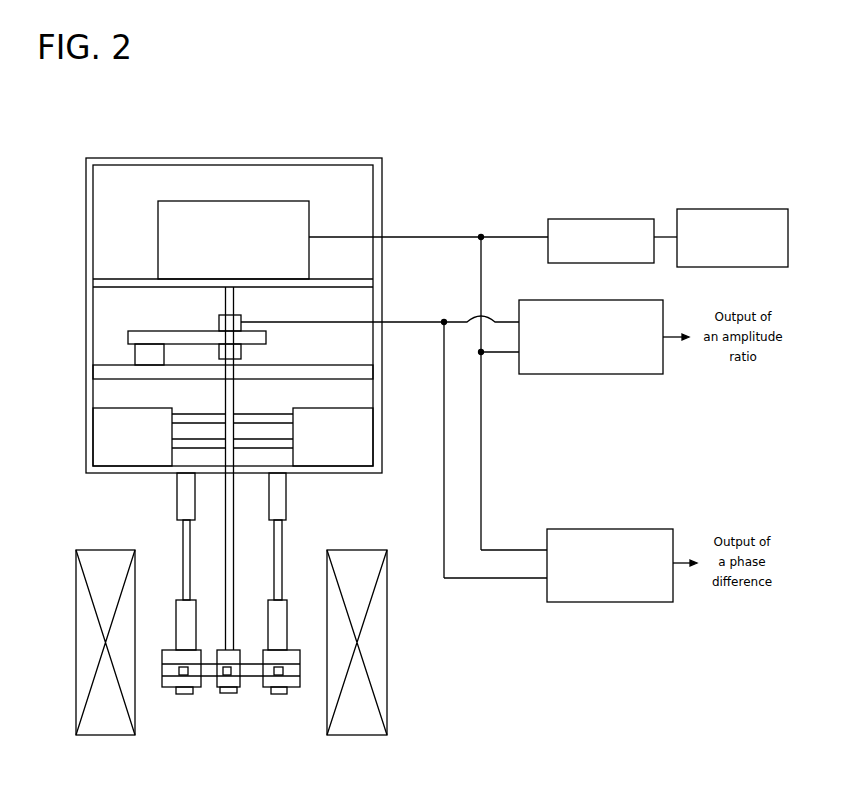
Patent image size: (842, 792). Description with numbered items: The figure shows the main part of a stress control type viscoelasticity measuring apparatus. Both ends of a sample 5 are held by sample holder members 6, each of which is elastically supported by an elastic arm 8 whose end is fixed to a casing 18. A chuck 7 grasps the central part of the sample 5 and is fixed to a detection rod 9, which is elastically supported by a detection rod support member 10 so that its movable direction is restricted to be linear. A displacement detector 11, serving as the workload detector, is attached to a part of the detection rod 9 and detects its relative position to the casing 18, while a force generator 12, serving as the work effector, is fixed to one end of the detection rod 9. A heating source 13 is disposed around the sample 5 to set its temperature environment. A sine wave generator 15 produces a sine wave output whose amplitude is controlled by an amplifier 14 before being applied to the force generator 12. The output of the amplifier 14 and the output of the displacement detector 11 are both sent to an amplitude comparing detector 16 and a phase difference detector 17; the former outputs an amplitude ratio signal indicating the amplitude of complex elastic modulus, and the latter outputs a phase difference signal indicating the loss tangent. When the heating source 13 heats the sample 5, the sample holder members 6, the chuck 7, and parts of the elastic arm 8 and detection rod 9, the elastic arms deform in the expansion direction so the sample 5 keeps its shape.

The sample 5 is at (167, 670).
The sample holder members 6 is at (175, 690).
The chuck 7 is at (225, 690).
The elastic arms 8 is at (187, 523).
The detection rod 9 is at (229, 519).
The detection rod support member 10 is at (202, 418).
The displacement detector 11 is at (192, 328).
The force generator 12 is at (172, 227).
The heating source 13 is at (378, 647).
The amplifier 14 is at (572, 218).
The sine wave generator 15 is at (702, 207).
The amplitude comparing detector 16 is at (602, 374).
The phase difference detector 17 is at (635, 602).
The casing 18 is at (380, 215).